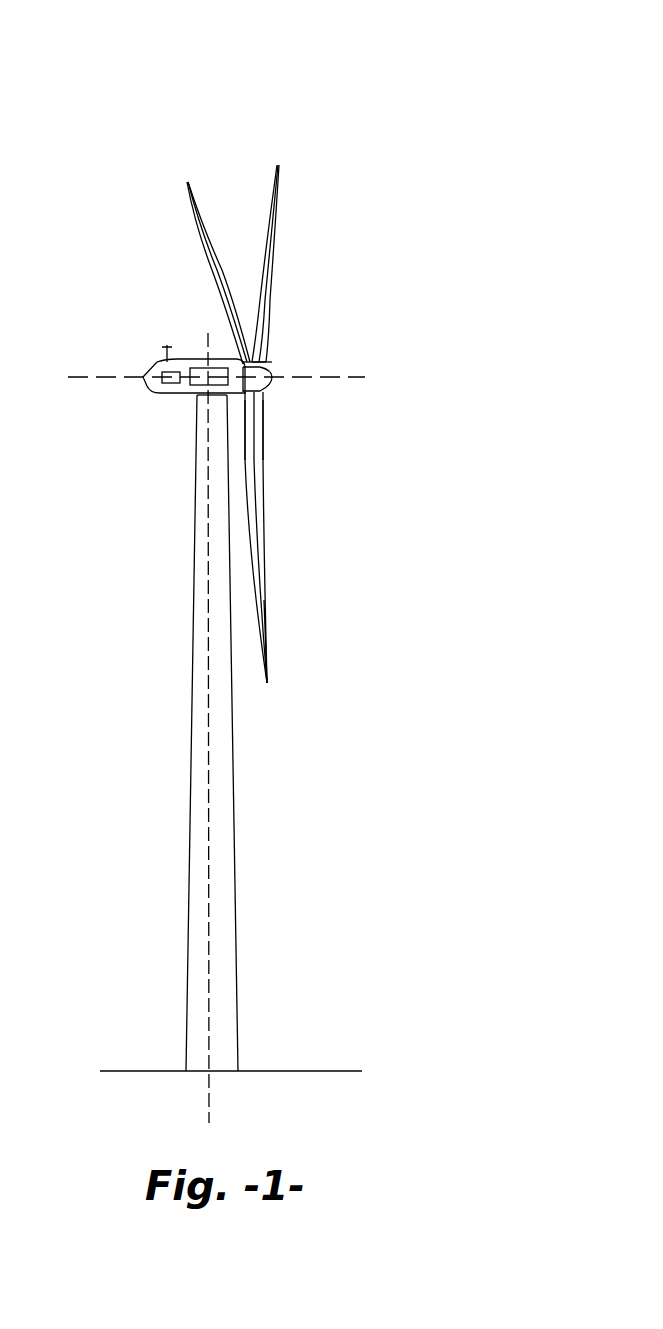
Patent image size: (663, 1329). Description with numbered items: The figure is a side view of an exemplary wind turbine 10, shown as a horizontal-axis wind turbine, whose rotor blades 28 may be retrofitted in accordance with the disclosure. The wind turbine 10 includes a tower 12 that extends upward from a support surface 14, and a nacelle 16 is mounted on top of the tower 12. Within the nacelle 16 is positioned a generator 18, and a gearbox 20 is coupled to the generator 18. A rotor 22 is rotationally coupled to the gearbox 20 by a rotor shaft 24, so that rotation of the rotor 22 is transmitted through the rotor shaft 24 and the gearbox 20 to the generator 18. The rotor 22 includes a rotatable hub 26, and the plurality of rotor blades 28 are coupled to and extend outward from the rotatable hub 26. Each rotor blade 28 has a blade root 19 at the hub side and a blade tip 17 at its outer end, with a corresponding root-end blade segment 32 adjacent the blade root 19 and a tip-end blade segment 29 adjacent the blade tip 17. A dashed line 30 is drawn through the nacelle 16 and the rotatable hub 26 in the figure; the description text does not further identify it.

The wind turbine 10 is at (427, 70).
The tower 12 is at (188, 837).
The support surface 14 is at (142, 1070).
The nacelle 16 is at (157, 393).
The blade tip 17 is at (270, 683).
The generator 18 is at (162, 373).
The blade root 19 is at (262, 368).
The gearbox 20 is at (192, 362).
The rotor 22 is at (279, 364).
The rotor shaft 24 is at (227, 417).
The rotatable hub 26 is at (272, 383).
The rotor blade 28 is at (200, 233).
The tip-end blade segment 29 is at (265, 630).
The rotor axis 30 is at (338, 378).
The root-end blade segment 32 is at (262, 456).